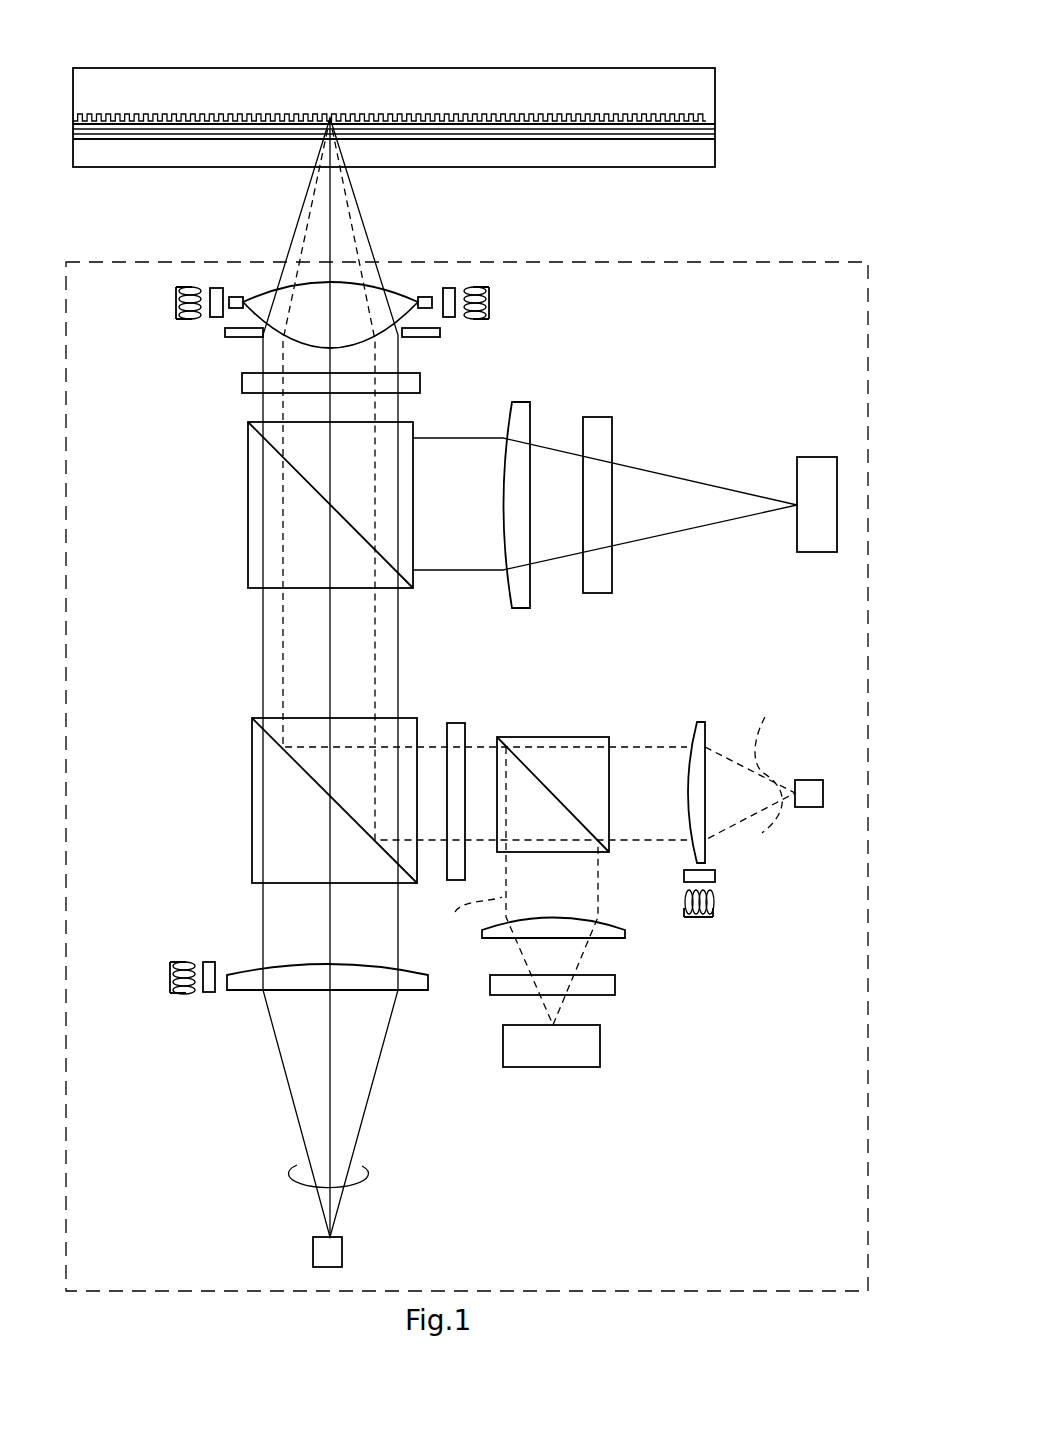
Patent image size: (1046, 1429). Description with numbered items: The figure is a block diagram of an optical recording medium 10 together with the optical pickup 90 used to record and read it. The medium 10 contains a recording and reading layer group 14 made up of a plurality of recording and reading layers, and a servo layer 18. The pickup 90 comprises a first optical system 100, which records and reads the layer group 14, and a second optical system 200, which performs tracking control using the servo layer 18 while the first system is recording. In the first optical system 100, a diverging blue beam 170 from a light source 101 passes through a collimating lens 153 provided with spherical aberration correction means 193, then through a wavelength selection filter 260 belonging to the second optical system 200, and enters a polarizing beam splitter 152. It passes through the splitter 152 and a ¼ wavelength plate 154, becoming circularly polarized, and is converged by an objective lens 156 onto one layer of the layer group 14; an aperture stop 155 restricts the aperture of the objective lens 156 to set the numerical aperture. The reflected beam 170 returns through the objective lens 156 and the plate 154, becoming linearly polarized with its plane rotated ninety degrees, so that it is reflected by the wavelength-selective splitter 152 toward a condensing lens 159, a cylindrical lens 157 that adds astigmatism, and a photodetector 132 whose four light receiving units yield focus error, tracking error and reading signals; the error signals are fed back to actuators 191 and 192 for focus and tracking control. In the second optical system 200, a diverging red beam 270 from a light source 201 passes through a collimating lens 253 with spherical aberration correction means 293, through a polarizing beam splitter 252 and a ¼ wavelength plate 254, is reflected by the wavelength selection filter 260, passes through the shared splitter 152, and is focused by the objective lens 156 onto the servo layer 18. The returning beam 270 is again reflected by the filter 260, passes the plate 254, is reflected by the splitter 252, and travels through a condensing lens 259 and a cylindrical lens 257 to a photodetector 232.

The optical recording medium 10 is at (496, 46).
The recording and reading layer group 14 is at (453, 140).
The servo layer 18 is at (512, 115).
The optical pickup 90 is at (720, 262).
The first optical system 100 is at (736, 404).
The light source 101 is at (330, 1255).
The photodetector 132 is at (811, 478).
The polarizing beam splitter 152 is at (248, 512).
The collimating lens 153 is at (428, 988).
The ¼ wavelength plate 154 is at (242, 383).
The aperture stop 155 is at (225, 333).
The objective lens 156 is at (405, 290).
The cylindrical lens 157 is at (598, 426).
The condensing lens 159 is at (516, 410).
The beam 170 is at (648, 467).
The actuator 191 is at (175, 300).
The actuator 192 is at (495, 300).
The spherical aberration correction means 193 is at (170, 977).
The second optical system 200 is at (752, 977).
The light source 201 is at (808, 780).
The photodetector 232 is at (600, 1045).
The polarizing beam splitter 252 is at (548, 737).
The collimating lens 253 is at (698, 722).
The ¼ wavelength plate 254 is at (453, 723).
The cylindrical lens 257 is at (615, 983).
The condensing lens 259 is at (625, 932).
The wavelength selection filter 260 is at (252, 806).
The beam 270 is at (611, 811).
The spherical aberration correction means 293 is at (722, 890).